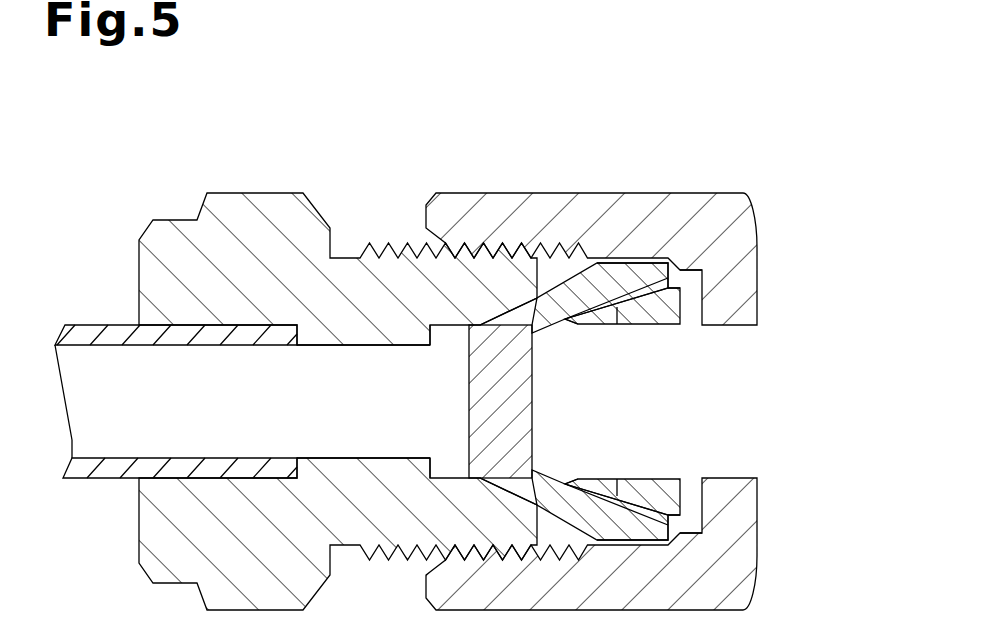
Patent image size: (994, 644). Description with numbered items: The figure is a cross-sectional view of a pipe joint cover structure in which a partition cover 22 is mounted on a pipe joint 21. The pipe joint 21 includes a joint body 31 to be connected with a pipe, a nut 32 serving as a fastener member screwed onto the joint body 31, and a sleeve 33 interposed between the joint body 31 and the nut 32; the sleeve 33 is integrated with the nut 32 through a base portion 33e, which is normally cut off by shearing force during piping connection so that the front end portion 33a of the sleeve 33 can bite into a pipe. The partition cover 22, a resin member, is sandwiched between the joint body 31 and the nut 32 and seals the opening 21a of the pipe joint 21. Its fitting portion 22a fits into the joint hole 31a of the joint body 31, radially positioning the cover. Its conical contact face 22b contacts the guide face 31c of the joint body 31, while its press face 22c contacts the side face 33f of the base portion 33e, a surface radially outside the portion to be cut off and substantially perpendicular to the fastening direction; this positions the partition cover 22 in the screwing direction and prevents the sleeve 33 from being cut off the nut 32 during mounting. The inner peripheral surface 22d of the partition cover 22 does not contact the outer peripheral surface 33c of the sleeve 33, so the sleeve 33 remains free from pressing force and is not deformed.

The pipe joint 21 is at (147, 128).
The opening 21a is at (400, 398).
The partition cover 22 is at (567, 346).
The fitting portion 22a is at (469, 384).
The contact face 22b is at (540, 336).
The press face 22c is at (672, 262).
The inner peripheral surface 22d is at (560, 326).
The joint body 31 is at (181, 218).
The joint hole 31a is at (440, 331).
The guide face 31c is at (523, 300).
The nut 32 is at (557, 192).
The sleeve 33 is at (680, 394).
The front end portion 33a is at (562, 314).
The outer peripheral surface 33c is at (617, 325).
The base portion 33e is at (678, 289).
The side face 33f is at (689, 278).